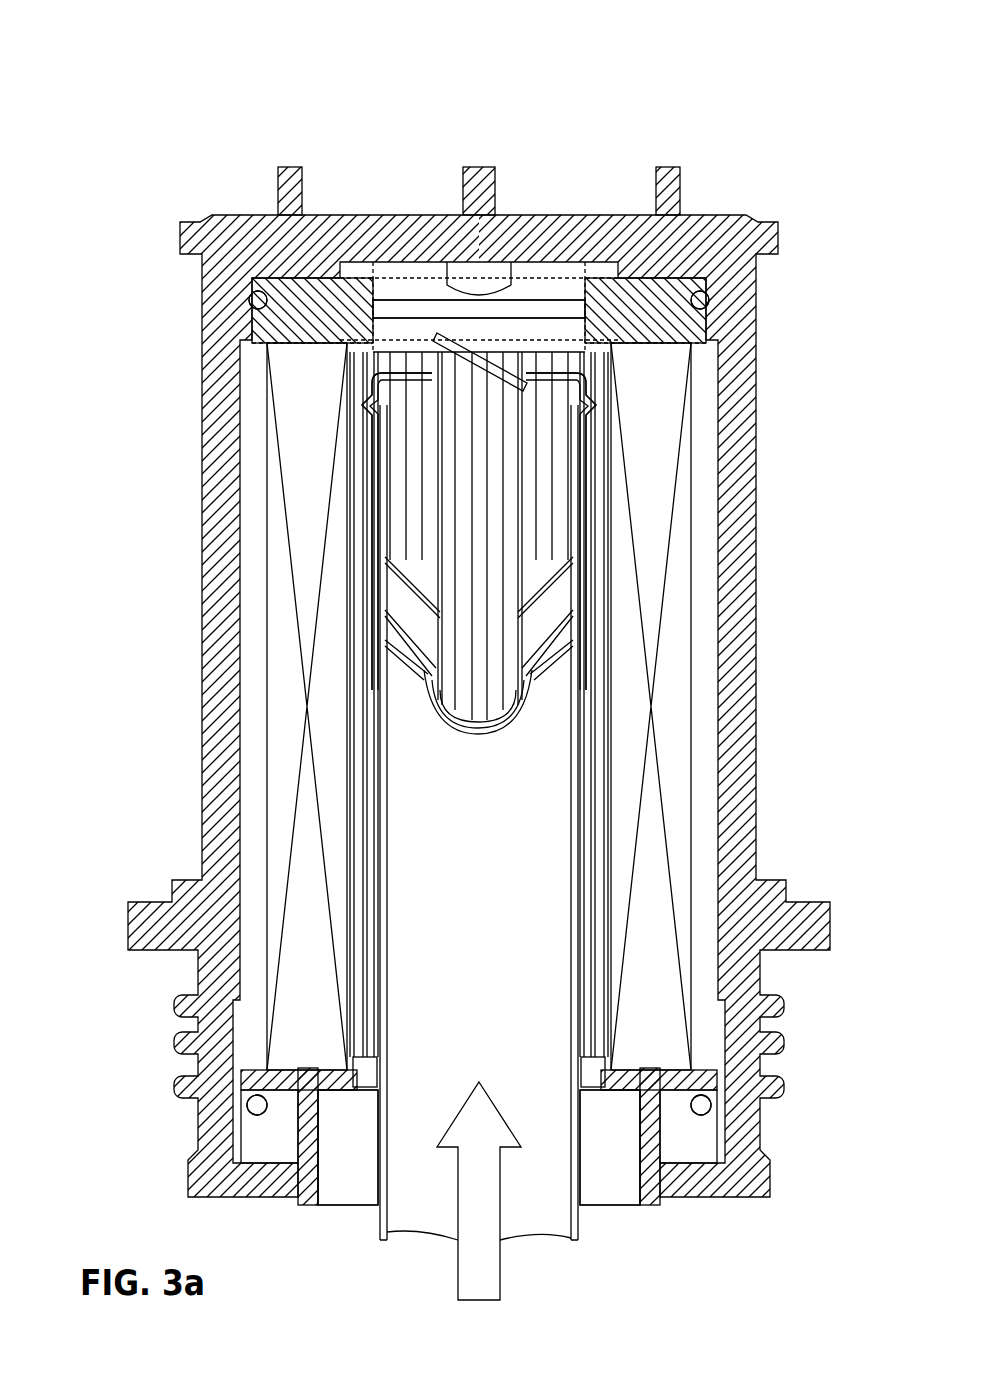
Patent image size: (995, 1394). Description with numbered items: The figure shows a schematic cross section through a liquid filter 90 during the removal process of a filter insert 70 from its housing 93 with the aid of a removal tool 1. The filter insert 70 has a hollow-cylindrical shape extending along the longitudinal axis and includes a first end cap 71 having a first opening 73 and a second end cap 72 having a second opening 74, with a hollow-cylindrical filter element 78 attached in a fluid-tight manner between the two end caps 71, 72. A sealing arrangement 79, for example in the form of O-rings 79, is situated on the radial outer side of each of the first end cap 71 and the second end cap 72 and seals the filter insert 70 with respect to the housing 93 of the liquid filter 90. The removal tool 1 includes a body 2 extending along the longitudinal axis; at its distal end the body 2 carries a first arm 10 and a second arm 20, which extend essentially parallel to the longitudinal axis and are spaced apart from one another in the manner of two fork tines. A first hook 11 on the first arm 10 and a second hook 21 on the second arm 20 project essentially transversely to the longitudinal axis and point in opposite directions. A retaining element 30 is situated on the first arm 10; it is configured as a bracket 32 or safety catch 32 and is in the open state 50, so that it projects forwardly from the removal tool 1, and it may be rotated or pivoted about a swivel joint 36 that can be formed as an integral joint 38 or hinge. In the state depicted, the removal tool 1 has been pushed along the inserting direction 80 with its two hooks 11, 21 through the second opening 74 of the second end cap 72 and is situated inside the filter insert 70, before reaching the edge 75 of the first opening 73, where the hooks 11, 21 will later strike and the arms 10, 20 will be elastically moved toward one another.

The removal tool 1 is at (540, 1245).
The body 2 is at (445, 808).
The first arm 10 is at (405, 478).
The first hook 11 is at (362, 405).
The second arm 20 is at (560, 478).
The second hook 21 is at (600, 405).
The retaining element 30 is at (535, 253).
The bracket 32 is at (485, 343).
The swivel joint 36 is at (535, 271).
The integral joint 38 is at (535, 350).
The open state 50 is at (96, 645).
The filter insert 70 is at (668, 643).
The first end cap 71 is at (265, 338).
The second end cap 72 is at (190, 1060).
The first opening 73 is at (420, 322).
The second opening 74 is at (370, 1080).
The edge 75 is at (372, 295).
The filter element 78 is at (642, 725).
The sealing arrangement 79 is at (706, 302).
The inserting direction 80 is at (478, 1258).
The liquid filter 90 is at (175, 155).
The housing 93 is at (215, 568).